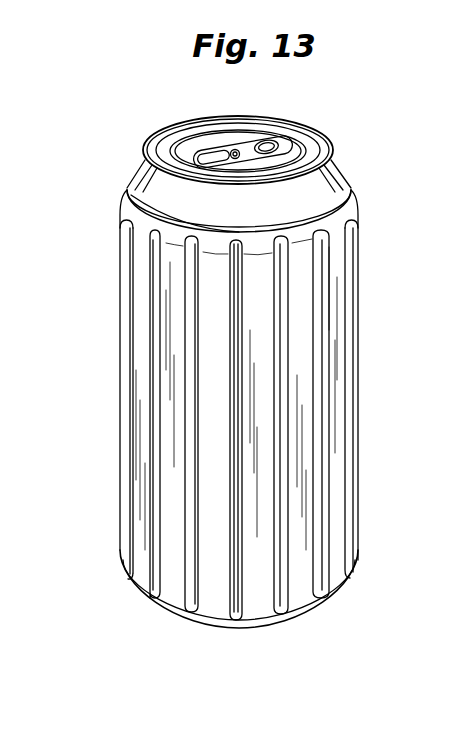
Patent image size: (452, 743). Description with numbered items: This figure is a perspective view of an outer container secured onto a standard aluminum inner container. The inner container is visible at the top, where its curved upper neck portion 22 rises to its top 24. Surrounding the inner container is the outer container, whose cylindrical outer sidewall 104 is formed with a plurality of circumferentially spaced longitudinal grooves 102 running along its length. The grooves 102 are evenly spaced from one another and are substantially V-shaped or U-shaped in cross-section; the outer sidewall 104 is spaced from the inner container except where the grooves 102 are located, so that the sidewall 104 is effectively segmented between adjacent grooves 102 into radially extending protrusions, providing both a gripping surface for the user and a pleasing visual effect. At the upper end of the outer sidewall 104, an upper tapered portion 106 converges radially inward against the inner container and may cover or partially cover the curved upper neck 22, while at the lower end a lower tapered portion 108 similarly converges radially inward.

The upper neck portion 22 is at (338, 182).
The top 24 is at (264, 146).
The longitudinal grooves 102 is at (128, 190).
The outer sidewall 104 is at (167, 412).
The upper tapered portion 106 is at (177, 236).
The lower tapered portion 108 is at (210, 610).